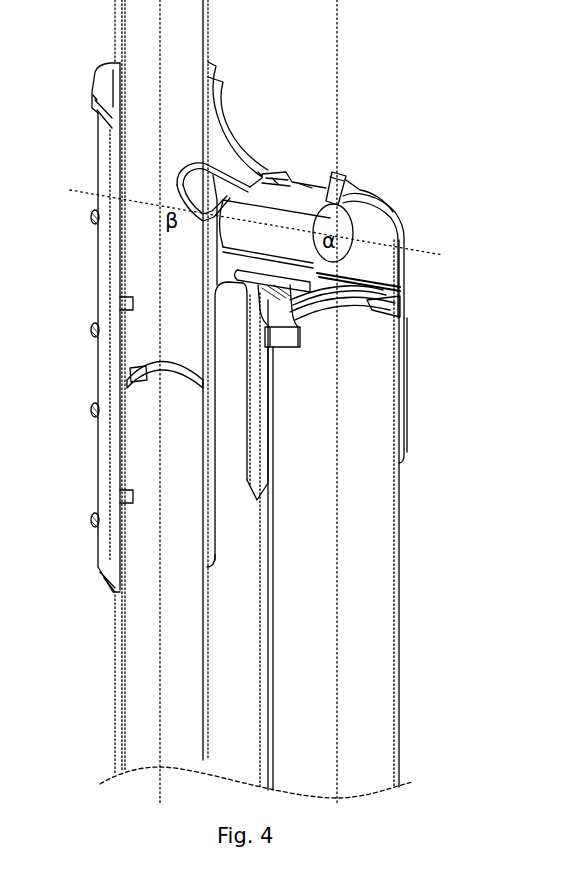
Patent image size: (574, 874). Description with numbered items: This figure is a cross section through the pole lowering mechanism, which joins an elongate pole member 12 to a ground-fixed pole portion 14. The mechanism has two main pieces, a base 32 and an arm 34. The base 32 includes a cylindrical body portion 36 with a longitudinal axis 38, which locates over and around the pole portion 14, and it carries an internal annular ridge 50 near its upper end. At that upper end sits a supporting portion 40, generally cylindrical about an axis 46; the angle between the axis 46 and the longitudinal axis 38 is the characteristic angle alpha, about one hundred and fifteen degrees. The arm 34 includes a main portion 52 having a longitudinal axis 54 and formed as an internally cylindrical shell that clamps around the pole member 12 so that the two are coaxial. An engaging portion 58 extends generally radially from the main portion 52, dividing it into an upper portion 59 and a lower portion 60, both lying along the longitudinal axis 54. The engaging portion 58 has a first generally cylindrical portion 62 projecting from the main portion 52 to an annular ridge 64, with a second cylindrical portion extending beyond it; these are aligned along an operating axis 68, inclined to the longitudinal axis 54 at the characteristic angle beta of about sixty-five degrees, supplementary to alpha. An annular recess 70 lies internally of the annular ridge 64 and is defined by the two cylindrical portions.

The pole member 12 is at (120, 717).
The pole portion 14 is at (398, 658).
The base 32 is at (380, 204).
The arm 34 is at (215, 478).
The body portion 36 is at (402, 402).
The longitudinal axis 38 is at (337, 770).
The supporting portion 40 is at (335, 180).
The axis 46 is at (421, 253).
The internal annular ridge 50 is at (373, 312).
The main portion 52 is at (105, 440).
The longitudinal axis 54 is at (160, 783).
The engaging portion 58 is at (223, 140).
The upper portion 59 is at (214, 85).
The lower portion 60 is at (107, 532).
The first generally cylindrical portion 62 is at (263, 173).
The annular ridge 64 is at (275, 183).
The operating axis 68 is at (95, 195).
The annular recess 70 is at (310, 187).